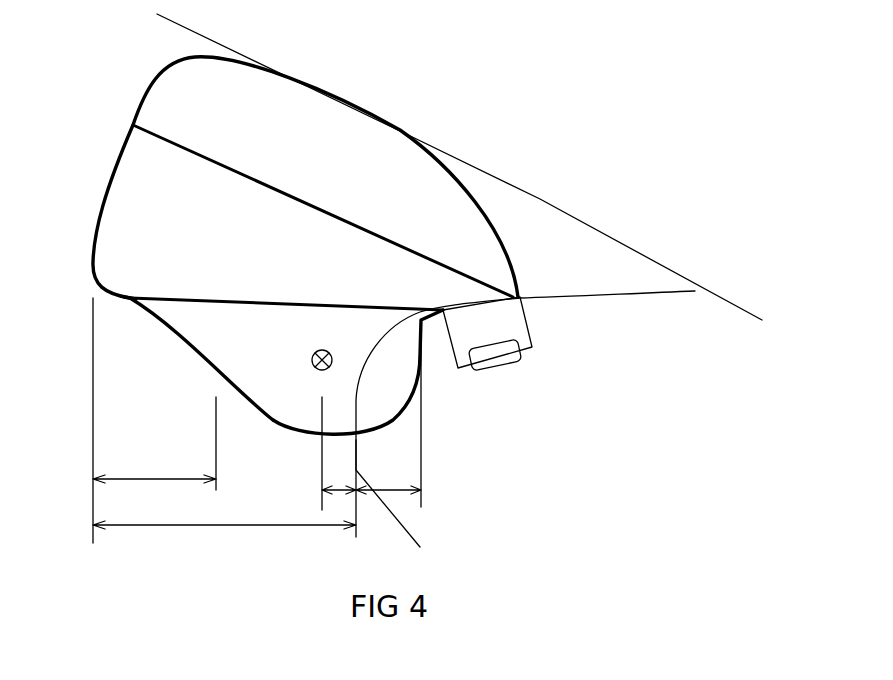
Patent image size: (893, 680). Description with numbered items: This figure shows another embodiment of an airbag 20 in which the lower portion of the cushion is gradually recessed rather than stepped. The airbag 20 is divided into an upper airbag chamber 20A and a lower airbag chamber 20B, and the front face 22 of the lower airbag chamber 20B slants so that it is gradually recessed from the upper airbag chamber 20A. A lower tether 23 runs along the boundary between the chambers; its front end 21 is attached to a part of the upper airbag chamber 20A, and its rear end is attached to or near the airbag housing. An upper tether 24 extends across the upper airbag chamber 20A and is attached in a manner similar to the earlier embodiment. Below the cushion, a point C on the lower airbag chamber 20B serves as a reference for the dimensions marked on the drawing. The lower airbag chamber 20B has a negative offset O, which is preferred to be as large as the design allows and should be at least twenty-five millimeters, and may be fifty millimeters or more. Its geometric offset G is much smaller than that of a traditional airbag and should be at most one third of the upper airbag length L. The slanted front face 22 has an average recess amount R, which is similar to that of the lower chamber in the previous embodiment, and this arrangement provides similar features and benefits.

The airbag 20 is at (279, 245).
The upper airbag chamber 20A is at (305, 177).
The lower airbag chamber 20B is at (345, 372).
The front end 21 is at (130, 302).
The front face 22 is at (213, 380).
The lower tether 23 is at (298, 300).
The upper tether 24 is at (287, 192).
The center point of lower chamber C is at (331, 354).
The average recess amount R is at (154, 469).
The geometric offset G is at (339, 478).
The negative offset O is at (388, 478).
The upper airbag length L is at (224, 513).